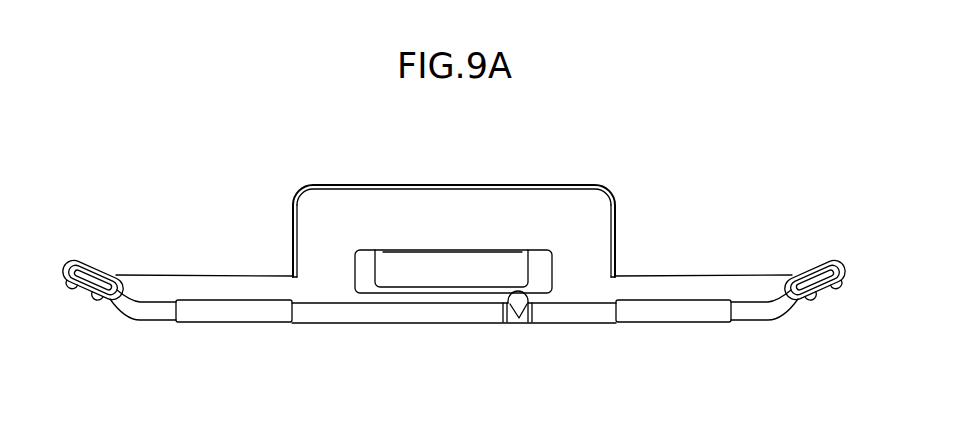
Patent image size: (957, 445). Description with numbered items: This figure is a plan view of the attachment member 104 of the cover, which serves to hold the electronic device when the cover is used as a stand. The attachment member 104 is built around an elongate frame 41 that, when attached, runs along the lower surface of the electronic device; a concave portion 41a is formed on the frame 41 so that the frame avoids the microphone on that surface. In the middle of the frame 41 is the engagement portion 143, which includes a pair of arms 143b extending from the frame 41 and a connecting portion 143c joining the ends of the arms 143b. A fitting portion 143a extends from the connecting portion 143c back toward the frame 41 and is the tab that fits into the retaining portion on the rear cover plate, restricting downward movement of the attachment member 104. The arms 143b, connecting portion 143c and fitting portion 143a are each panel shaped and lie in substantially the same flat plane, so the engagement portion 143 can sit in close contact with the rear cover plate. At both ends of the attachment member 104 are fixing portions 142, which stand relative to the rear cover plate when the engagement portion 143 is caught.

The attachment member 104 is at (605, 160).
The engagement portion 143 is at (467, 178).
The fitting portion 143a is at (447, 275).
The arms 143b is at (312, 240).
The connecting portion 143c is at (407, 202).
The fixing portion 142 is at (100, 256).
The frame 41 is at (558, 297).
The concave portion 41a is at (517, 314).